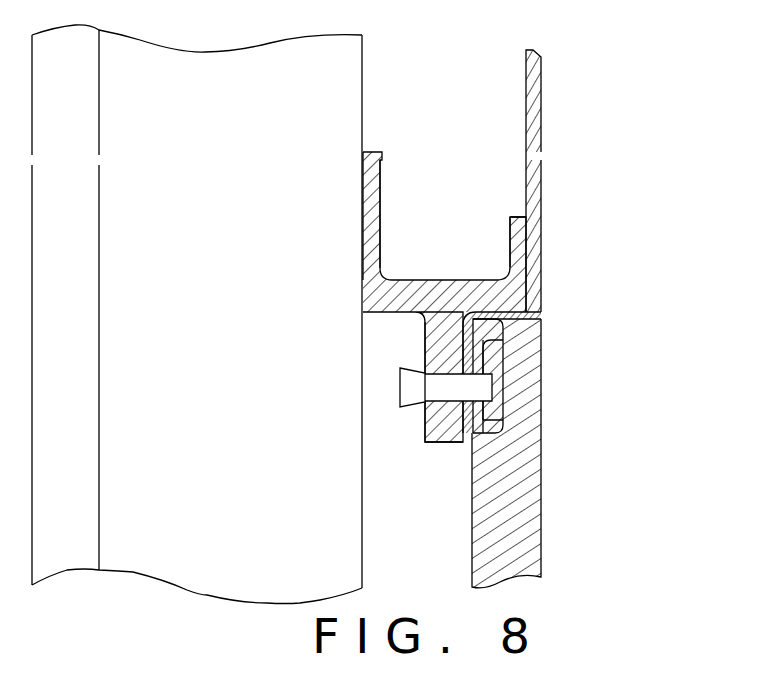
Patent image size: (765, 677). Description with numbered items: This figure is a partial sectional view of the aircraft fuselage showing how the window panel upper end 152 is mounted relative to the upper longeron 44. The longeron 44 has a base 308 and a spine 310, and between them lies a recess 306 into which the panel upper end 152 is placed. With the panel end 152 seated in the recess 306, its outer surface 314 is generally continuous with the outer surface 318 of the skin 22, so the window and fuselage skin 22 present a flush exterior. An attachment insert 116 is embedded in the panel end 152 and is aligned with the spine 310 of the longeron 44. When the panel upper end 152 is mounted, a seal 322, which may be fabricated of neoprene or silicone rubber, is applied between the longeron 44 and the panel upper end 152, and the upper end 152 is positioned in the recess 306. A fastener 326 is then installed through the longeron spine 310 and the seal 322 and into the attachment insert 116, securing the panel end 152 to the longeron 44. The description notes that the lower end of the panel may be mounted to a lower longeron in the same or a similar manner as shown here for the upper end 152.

The skin 22 is at (541, 156).
The upper longeron 44 is at (383, 173).
The base 308 is at (413, 278).
The outer surface of the skin 318 is at (541, 292).
The seal 322 is at (540, 316).
The recess 306 is at (540, 352).
The attachment insert 116 is at (540, 386).
The window panel upper end 152 is at (540, 427).
The outer surface of the panel end 314 is at (540, 500).
The fastener 326 is at (412, 368).
The spine 310 is at (425, 424).